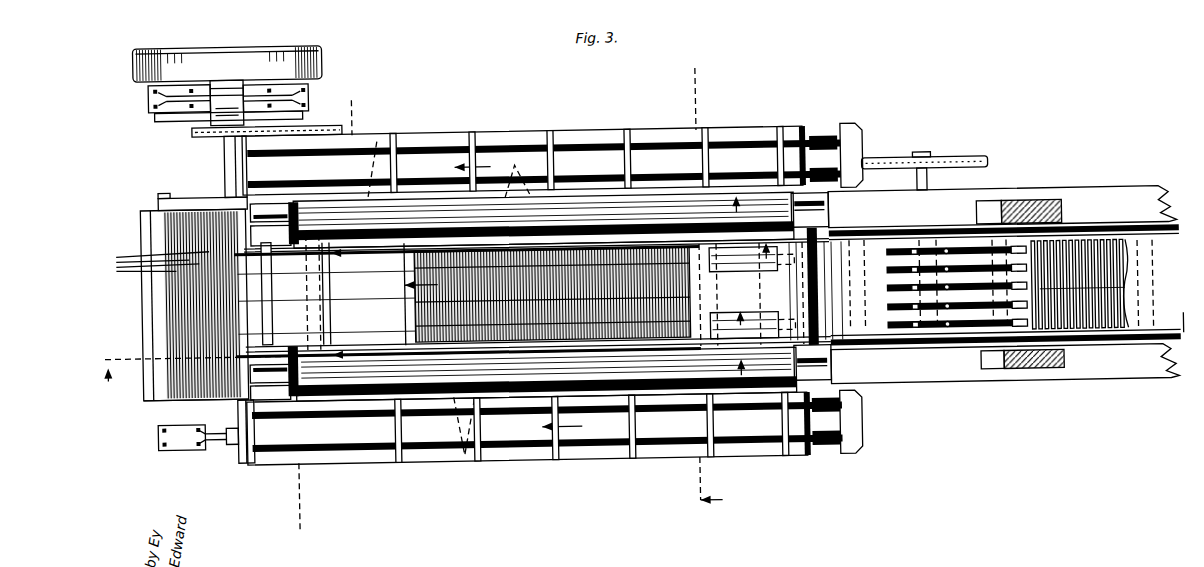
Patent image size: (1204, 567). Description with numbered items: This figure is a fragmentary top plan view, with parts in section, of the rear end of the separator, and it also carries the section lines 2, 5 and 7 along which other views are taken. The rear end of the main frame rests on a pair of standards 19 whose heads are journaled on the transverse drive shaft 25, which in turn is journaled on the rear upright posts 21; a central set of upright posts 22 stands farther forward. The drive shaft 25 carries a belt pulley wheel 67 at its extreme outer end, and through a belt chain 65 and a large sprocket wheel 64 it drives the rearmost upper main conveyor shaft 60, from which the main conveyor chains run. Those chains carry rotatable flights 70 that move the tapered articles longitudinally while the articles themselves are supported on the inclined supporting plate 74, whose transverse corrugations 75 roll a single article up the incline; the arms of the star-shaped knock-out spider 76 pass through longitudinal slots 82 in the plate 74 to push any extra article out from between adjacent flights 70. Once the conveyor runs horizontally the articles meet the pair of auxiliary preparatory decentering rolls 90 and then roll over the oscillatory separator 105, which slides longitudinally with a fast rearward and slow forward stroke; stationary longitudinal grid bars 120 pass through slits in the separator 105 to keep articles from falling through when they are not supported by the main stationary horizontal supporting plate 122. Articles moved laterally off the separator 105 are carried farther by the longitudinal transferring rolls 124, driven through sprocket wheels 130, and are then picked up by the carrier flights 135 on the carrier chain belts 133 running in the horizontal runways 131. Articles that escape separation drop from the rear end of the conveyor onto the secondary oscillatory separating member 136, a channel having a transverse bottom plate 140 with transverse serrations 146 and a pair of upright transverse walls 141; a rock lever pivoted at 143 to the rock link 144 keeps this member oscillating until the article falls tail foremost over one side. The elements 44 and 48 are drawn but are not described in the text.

The belt pulley wheel 67 is at (227, 86).
The standards 19 is at (152, 93).
The sprocket wheel 64 is at (268, 118).
The section line 5- 5 is at (323, 317).
The belt chain 65 is at (213, 125).
The transverse drive shaft 25 is at (227, 156).
The rock link 144 is at (187, 192).
The pivot 143 is at (167, 193).
The secondary oscillatory separating member 136 is at (164, 234).
The transverse serrations 146 is at (150, 266).
The upright transverse walls 141 is at (148, 300).
The transverse bottom plate 140 is at (170, 394).
The section line 2- 2 is at (636, 339).
The sprocket wheels 130 is at (300, 207).
The rear upright posts 21 is at (274, 302).
The rearmost upper main conveyor shaft 60 is at (268, 295).
The stationary longitudinal grid bars 120 is at (327, 296).
The oscillatory separator 105 is at (415, 317).
The longitudinal transferring rolls 124 is at (424, 215).
The horizontal runways 131 is at (522, 131).
The carrier flights 135 is at (627, 131).
The carrier chain belts 133 is at (610, 173).
The section line 7- 7 is at (701, 292).
The main stationary horizontal supporting plate 122 is at (675, 291).
The auxiliary preparatory decentering rolls 90 is at (729, 274).
The central upright posts 22 is at (811, 287).
The longitudinal slots 82 is at (893, 277).
The upper bar 44 is at (927, 249).
The rack bar 48 is at (957, 165).
The transverse corrugations 75 is at (1108, 274).
The rotatable flights 70 is at (1150, 298).
The inclined supporting plate 74 is at (884, 345).
The knock-out spider 76 is at (963, 319).